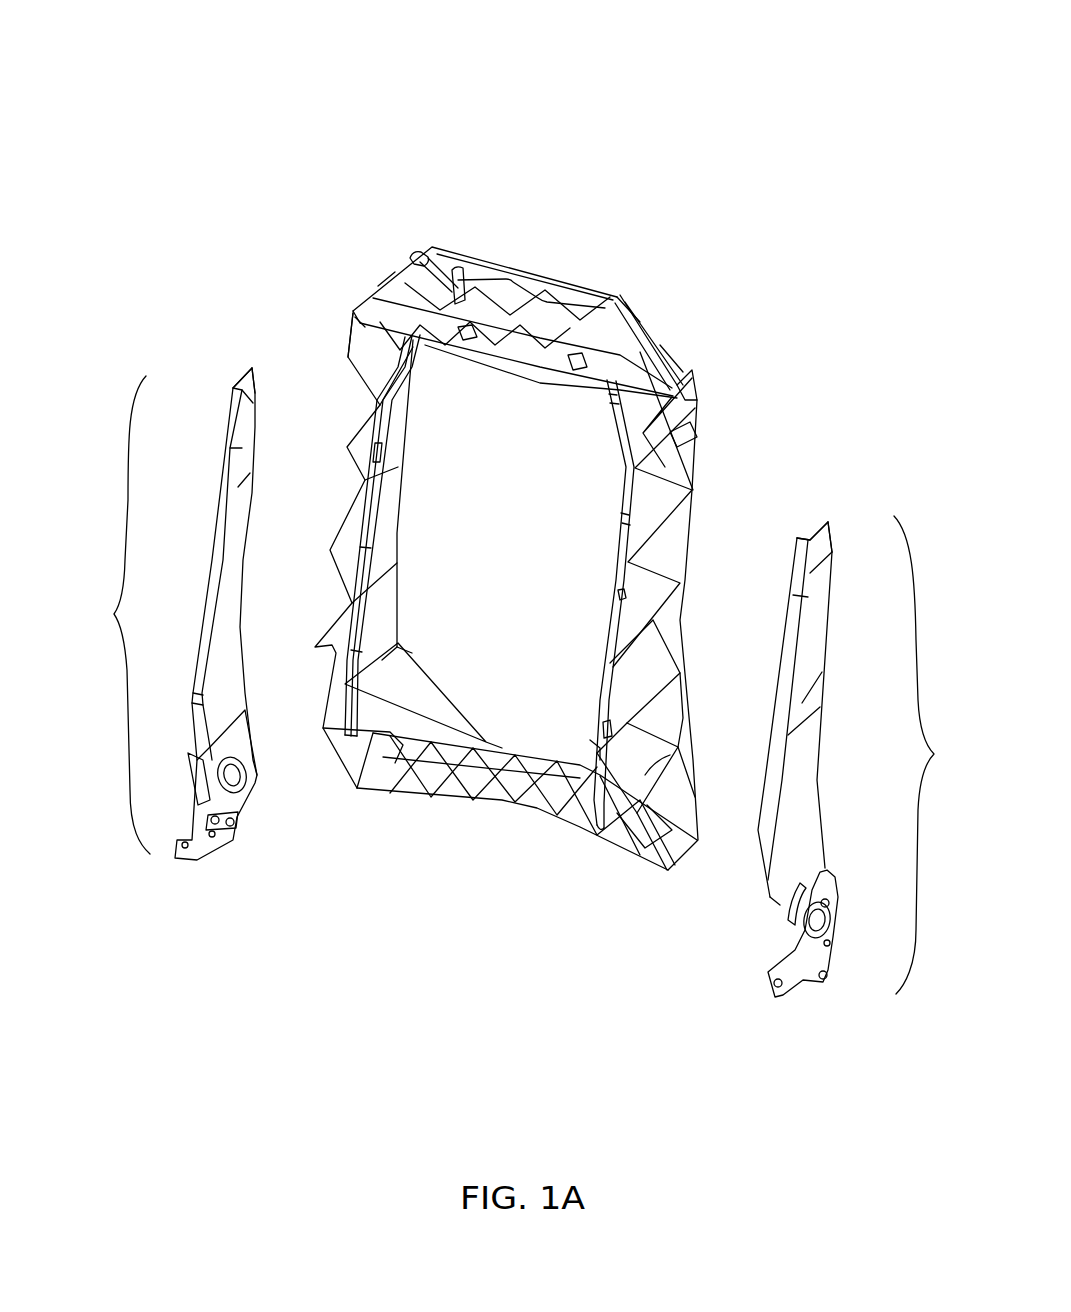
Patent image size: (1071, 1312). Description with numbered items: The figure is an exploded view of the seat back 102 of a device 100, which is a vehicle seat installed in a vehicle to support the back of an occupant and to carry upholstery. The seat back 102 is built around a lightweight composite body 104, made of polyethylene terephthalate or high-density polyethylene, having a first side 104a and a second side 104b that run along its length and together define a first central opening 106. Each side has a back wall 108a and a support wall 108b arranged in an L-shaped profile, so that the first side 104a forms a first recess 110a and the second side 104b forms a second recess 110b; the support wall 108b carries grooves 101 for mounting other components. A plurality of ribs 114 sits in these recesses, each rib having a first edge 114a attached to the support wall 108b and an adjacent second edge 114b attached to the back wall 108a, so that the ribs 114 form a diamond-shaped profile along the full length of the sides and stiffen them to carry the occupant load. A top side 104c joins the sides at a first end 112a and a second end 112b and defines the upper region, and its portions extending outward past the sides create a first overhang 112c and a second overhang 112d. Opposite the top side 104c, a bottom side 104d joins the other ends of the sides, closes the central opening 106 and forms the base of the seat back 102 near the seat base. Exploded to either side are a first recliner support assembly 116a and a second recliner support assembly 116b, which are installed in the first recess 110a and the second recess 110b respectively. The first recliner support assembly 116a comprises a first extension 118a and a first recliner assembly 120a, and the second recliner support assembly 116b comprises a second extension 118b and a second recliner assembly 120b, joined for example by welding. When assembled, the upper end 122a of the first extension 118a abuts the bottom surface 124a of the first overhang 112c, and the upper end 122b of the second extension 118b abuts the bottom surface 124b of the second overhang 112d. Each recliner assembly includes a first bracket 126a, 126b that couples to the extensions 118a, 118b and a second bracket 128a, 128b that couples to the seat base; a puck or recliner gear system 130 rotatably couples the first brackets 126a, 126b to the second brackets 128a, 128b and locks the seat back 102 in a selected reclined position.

The device 100 is at (462, 58).
The grooves 101 is at (578, 362).
The seat back 102 is at (546, 118).
The composite body 104 is at (600, 205).
The first side 104a is at (725, 443).
The second side 104b is at (345, 400).
The top side 104c is at (569, 261).
The bottom side 104d is at (508, 810).
The first central opening 106 is at (525, 545).
The back wall 108a is at (692, 513).
The support wall 108b is at (623, 505).
The first recess 110a is at (675, 620).
The second recess 110b is at (365, 507).
The first end 112a is at (683, 372).
The second end 112b is at (357, 310).
The first overhang 112c is at (670, 338).
The second overhang 112d is at (378, 286).
The ribs 114 is at (360, 425).
The first edge 114a is at (593, 743).
The second edge 114b is at (683, 718).
The first recliner support assembly 116a is at (792, 761).
The second recliner support assembly 116b is at (194, 637).
The first extension 118a is at (802, 703).
The second extension 118b is at (220, 510).
The first recliner assembly 120a is at (695, 983).
The second recliner assembly 120b is at (248, 886).
The upper end 122a is at (823, 520).
The upper end 122b is at (245, 382).
The bottom surface 124a is at (672, 402).
The bottom surface 124b is at (356, 313).
The first bracket 126a is at (790, 920).
The first bracket 126b is at (188, 753).
The second bracket 128a is at (812, 975).
The second bracket 128b is at (197, 840).
The recliner gear system 130 is at (235, 792).